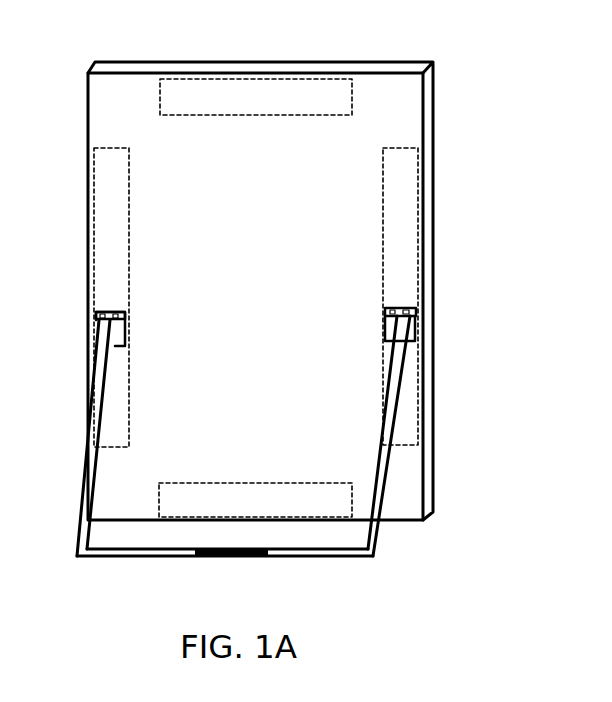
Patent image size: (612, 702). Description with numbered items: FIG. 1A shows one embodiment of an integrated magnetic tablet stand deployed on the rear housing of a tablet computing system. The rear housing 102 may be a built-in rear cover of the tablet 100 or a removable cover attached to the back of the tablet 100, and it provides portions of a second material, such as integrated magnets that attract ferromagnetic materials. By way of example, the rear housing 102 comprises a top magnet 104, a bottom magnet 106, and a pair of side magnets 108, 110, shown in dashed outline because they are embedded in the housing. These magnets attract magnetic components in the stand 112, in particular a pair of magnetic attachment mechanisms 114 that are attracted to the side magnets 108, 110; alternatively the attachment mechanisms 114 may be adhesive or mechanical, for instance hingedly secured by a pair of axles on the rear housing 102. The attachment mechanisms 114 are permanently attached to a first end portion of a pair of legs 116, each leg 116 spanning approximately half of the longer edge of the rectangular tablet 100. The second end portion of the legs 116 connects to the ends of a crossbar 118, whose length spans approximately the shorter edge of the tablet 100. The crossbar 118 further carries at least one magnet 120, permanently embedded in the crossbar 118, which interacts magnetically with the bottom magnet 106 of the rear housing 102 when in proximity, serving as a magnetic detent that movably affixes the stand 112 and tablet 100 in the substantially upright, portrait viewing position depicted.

The tablet 100 is at (429, 534).
The rear housing 102 is at (427, 90).
The top magnet 104 is at (260, 80).
The bottom magnet 106 is at (159, 497).
The side magnet 108 is at (92, 228).
The side magnet 110 is at (421, 228).
The stand 112 is at (253, 466).
The magnetic attachment mechanism 114 is at (92, 346).
The leg 116 is at (88, 466).
The crossbar 118 is at (113, 557).
The magnet 120 is at (250, 558).